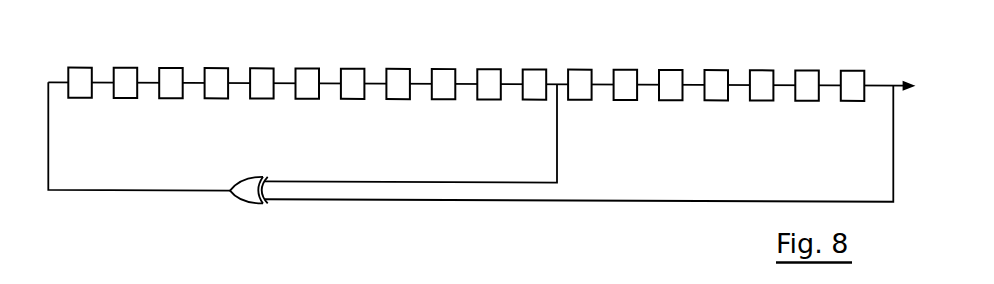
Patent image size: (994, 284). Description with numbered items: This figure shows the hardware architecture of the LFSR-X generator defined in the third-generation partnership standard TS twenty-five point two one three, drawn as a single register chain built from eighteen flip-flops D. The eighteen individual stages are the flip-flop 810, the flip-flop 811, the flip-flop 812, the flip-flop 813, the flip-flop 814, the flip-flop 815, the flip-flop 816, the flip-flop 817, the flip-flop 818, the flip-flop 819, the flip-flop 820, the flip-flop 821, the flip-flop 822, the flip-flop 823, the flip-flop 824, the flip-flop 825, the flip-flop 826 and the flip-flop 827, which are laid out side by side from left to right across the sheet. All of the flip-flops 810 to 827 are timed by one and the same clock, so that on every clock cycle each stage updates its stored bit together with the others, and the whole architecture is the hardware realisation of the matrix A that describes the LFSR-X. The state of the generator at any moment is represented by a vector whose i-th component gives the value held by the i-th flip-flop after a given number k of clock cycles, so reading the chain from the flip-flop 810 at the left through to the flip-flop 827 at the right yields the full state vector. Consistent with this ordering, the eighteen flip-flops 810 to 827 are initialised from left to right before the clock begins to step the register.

The flip-flop 810 is at (846, 98).
The flip-flop 811 is at (810, 67).
The flip-flop 812 is at (755, 98).
The flip-flop 813 is at (719, 67).
The flip-flop 814 is at (664, 98).
The flip-flop 815 is at (628, 67).
The flip-flop 816 is at (573, 98).
The flip-flop 817 is at (537, 67).
The flip-flop 818 is at (482, 98).
The flip-flop 819 is at (447, 67).
The flip-flop 820 is at (392, 98).
The flip-flop 821 is at (356, 67).
The flip-flop 822 is at (301, 98).
The flip-flop 823 is at (265, 67).
The flip-flop 824 is at (210, 98).
The flip-flop 825 is at (174, 67).
The flip-flop 826 is at (119, 98).
The flip-flop 827 is at (83, 67).